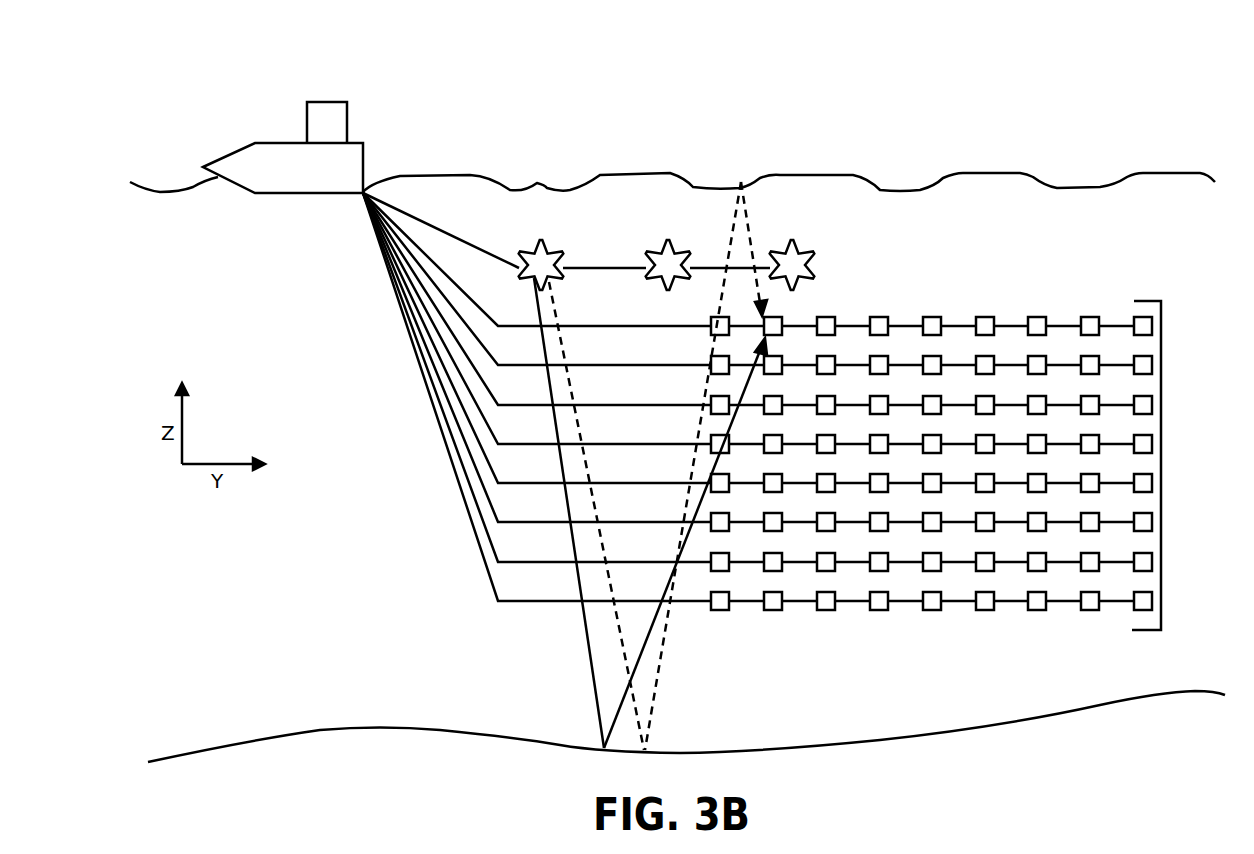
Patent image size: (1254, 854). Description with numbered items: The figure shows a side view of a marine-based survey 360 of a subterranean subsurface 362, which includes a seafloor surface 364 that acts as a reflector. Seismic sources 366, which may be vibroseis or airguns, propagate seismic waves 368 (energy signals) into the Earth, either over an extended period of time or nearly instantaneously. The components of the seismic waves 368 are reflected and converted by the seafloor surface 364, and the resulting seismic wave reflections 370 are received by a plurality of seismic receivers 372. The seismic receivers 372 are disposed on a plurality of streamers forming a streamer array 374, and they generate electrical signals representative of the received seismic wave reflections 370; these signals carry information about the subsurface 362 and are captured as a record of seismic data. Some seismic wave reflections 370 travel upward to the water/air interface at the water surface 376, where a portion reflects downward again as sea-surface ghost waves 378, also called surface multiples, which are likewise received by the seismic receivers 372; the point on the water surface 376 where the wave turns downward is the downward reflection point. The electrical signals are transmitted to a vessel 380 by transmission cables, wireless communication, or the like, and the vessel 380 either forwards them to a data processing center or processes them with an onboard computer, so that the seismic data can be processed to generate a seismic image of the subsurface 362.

The survey 360 is at (190, 85).
The subsurface 362 is at (293, 782).
The seafloor surface 364 is at (1006, 727).
The seismic sources 366 is at (566, 262).
The seismic waves 368 is at (566, 351).
The seismic wave reflections 370 is at (702, 430).
The seismic receivers 372 is at (1091, 317).
The streamer array 374 is at (1161, 462).
The water surface 376 is at (963, 173).
The sea-surface ghost waves 378 is at (745, 228).
The vessel 380 is at (327, 100).